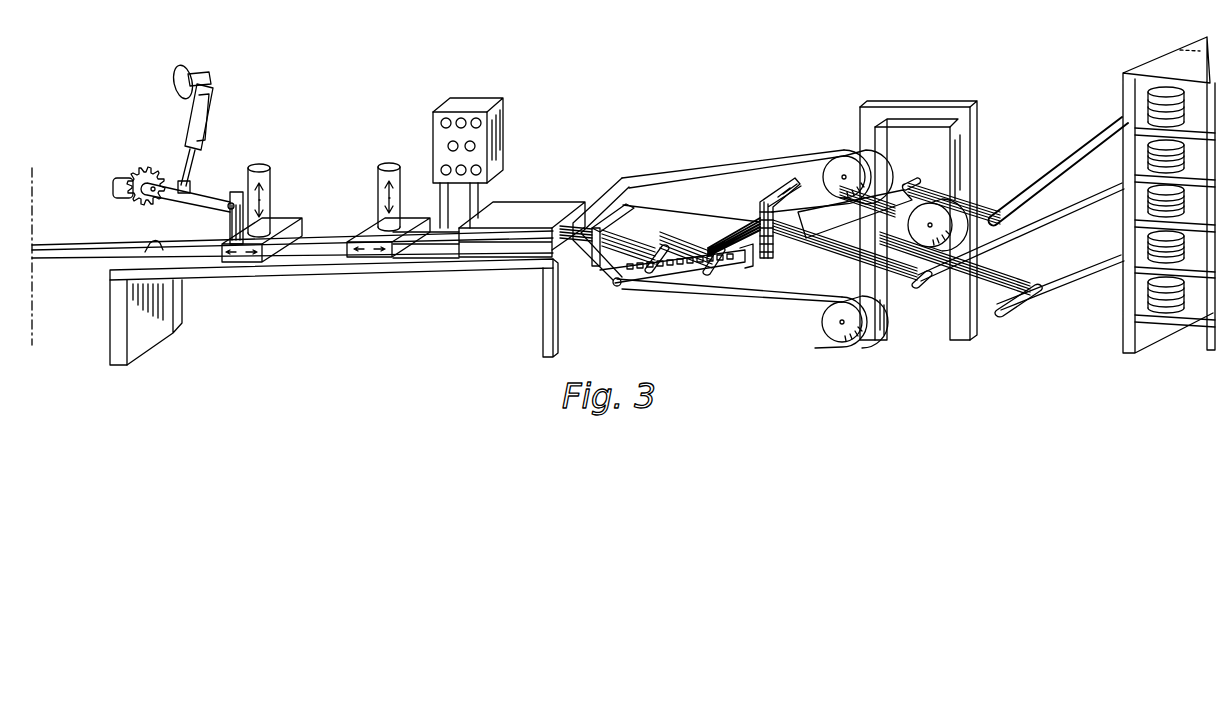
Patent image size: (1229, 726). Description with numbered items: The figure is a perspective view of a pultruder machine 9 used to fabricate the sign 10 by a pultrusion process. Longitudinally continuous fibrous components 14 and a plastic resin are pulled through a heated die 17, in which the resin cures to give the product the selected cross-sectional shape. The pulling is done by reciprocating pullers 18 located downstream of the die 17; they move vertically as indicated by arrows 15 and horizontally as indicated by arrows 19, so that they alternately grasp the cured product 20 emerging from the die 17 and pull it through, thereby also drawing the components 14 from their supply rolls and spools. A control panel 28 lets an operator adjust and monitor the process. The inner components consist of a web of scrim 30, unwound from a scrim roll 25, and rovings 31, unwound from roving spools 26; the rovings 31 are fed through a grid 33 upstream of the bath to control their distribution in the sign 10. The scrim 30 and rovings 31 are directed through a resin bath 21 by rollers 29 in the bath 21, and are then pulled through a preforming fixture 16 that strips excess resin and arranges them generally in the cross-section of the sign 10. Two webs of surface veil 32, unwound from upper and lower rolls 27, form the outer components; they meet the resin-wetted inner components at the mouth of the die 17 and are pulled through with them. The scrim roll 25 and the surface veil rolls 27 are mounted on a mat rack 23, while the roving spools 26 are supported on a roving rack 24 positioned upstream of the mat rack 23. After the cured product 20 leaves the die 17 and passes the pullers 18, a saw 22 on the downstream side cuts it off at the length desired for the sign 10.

The pultruder machine 9 is at (577, 124).
The sign 10 is at (80, 243).
The longitudinally continuous components 14 is at (645, 170).
The arrows 15 is at (273, 189).
The preforming fixture 16 is at (623, 205).
The heated die 17 is at (556, 204).
The reciprocating pullers 18 is at (258, 167).
The arrows 19 is at (242, 258).
The cured product 20 is at (442, 243).
The resin bath 21 is at (726, 270).
The saw 22 is at (147, 165).
The mat rack 23 is at (963, 106).
The roving rack 24 is at (1137, 65).
The scrim roll 25 is at (940, 233).
The roving spools 26 is at (1182, 110).
The surface veil rolls 27 is at (849, 152).
The control panel 28 is at (508, 113).
The rollers 29 is at (670, 226).
The web of scrim 30 is at (901, 200).
The rovings 31 is at (1112, 185).
The webs of surface veil 32 is at (806, 150).
The grid 33 is at (768, 197).